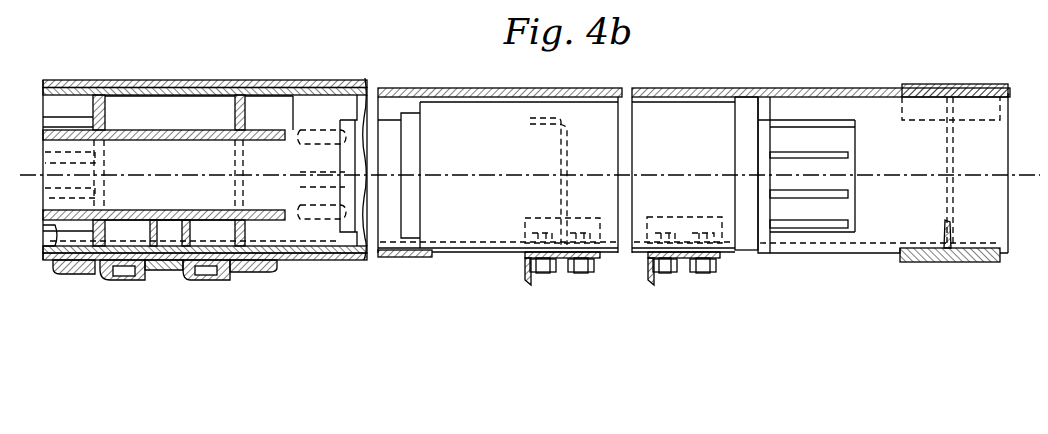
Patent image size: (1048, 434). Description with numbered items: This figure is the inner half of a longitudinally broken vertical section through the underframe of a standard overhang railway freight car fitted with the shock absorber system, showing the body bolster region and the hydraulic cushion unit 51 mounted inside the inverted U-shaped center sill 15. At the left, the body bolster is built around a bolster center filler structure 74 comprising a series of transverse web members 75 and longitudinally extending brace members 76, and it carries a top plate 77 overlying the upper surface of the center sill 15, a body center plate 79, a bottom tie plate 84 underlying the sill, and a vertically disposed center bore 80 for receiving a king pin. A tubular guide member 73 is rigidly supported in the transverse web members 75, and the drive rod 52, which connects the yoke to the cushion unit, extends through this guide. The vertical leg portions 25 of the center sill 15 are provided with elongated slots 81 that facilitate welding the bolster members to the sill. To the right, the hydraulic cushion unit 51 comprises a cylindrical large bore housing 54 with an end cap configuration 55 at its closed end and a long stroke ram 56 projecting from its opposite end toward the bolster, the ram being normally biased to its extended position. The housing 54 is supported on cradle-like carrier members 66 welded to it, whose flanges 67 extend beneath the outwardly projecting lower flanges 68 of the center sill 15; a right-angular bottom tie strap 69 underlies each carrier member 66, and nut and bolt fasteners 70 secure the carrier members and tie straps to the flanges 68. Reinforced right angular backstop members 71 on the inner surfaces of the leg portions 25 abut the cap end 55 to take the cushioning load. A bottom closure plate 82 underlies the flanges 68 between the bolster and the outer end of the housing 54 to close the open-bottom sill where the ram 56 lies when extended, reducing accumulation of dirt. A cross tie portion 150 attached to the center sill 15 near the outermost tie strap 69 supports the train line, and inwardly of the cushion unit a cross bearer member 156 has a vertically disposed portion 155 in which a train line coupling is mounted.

The center sill 15 is at (836, 88).
The vertical leg portions 25 is at (993, 148).
The hydraulic cushion unit 51 is at (703, 97).
The drive rod 52 is at (297, 83).
The housing 54 is at (453, 123).
The end cap configuration 55 is at (753, 100).
The ram 56 is at (388, 140).
The carrier members 66 is at (555, 218).
The flanges 67 is at (527, 256).
The lower flanges 68 is at (468, 235).
The bottom tie strap 69 is at (527, 265).
The nut and bolt fasteners 70 is at (525, 222).
The backstop members 71 is at (842, 170).
The tubular guide member 73 is at (205, 97).
The bolster center filler structure 74 is at (262, 108).
The transverse web members 75 is at (120, 96).
The longitudinally extending brace members 76 is at (70, 107).
The top plate 77 is at (184, 130).
The body center plate 79 is at (210, 272).
The center bore 80 is at (160, 243).
The elongated slots 81 is at (306, 132).
The bottom closure plate 82 is at (413, 258).
The bottom tie plate 84 is at (336, 261).
The cross tie portion 150 is at (565, 158).
The vertically disposed portion 155 is at (953, 143).
The cross bearer member 156 is at (982, 264).